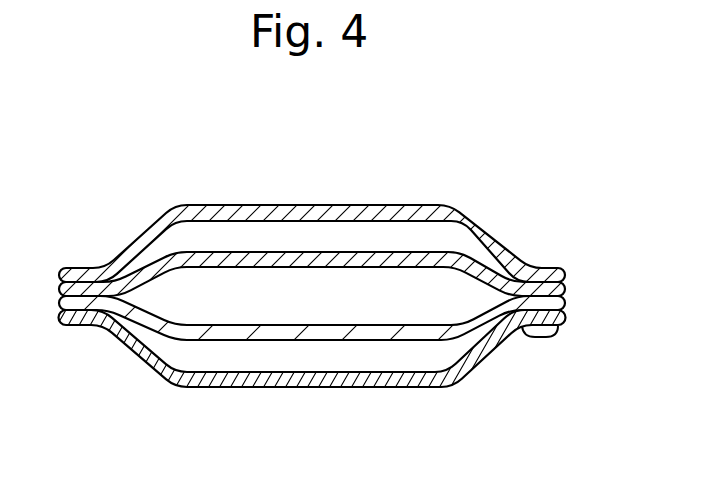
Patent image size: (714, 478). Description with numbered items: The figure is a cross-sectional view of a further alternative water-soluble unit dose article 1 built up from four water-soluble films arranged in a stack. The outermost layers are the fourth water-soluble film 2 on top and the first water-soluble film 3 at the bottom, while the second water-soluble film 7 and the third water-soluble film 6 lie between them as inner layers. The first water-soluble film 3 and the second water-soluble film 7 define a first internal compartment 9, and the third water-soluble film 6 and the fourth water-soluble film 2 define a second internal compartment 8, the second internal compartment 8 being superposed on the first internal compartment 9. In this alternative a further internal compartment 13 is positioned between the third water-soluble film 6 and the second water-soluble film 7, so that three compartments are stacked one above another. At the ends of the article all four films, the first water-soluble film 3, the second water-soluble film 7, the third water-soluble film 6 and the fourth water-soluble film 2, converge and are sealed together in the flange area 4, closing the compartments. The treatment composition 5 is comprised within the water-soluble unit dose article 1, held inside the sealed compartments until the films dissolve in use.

The water-soluble unit dose article 1 is at (601, 155).
The fourth water-soluble film 2 is at (526, 263).
The first water-soluble film 3 is at (476, 374).
The flange area 4 is at (543, 338).
The treatment composition 5 is at (157, 348).
The third water-soluble film 6 is at (564, 289).
The second water-soluble film 7 is at (564, 302).
The second internal compartment 8 is at (363, 230).
The first internal compartment 9 is at (352, 352).
The further internal compartment 13 is at (140, 290).